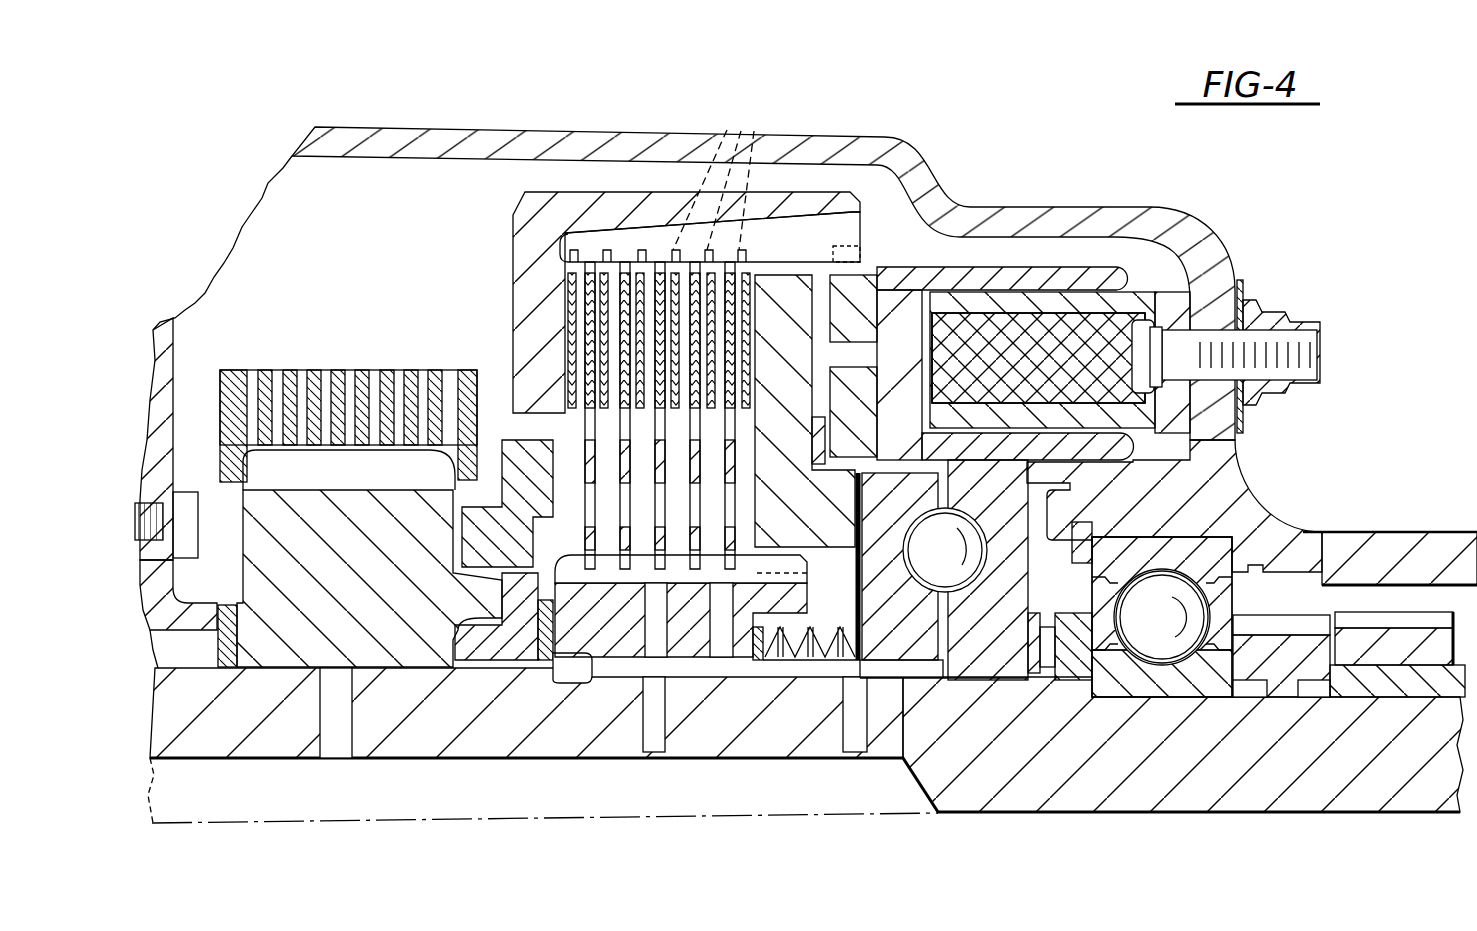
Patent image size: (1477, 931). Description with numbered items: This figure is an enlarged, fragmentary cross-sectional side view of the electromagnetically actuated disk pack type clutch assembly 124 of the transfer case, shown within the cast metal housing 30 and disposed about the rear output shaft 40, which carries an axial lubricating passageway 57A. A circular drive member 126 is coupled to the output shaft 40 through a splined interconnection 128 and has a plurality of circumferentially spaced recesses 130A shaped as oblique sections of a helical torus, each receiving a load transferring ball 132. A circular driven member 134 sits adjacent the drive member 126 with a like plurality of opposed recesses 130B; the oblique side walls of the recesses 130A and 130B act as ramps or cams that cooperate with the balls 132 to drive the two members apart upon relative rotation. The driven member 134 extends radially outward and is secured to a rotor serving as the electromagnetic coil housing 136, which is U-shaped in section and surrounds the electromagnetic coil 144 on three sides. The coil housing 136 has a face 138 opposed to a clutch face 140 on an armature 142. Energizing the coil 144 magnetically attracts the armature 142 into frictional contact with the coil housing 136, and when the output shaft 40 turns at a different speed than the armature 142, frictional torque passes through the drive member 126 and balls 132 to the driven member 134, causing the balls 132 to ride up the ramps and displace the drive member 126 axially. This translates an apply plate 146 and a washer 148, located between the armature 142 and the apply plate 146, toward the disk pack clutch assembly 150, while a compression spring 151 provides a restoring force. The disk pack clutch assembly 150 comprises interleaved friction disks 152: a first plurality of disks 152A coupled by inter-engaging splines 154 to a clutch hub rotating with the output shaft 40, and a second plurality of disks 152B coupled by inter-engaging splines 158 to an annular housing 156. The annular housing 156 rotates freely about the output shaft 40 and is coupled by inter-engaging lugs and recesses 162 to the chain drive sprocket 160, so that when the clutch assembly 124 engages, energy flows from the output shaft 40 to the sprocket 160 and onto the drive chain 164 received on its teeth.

The housing 30 is at (1393, 542).
The rear output shaft 40 is at (1255, 805).
The passageway 57A is at (515, 805).
The clutch assembly 124 is at (938, 168).
The circular drive member 126 is at (900, 660).
The splined interconnection 128 is at (927, 673).
The recesses 130A is at (920, 575).
The opposed recesses 130B is at (980, 525).
The load transferring balls 132 is at (945, 550).
The circular driven member 134 is at (1008, 660).
The electromagnetic coil housing 136 is at (1110, 265).
The face 138 is at (860, 330).
The clutch face 140 is at (900, 270).
The armature 142 is at (832, 258).
The electromagnetic coil 144 is at (1125, 320).
The apply plate 146 is at (830, 553).
The washer 148 is at (748, 497).
The disk pack clutch assembly 150 is at (600, 200).
The compression spring 151 is at (800, 752).
The friction plates or disks 152 is at (595, 405).
The first plurality of disks 152A is at (628, 478).
The second plurality of disks 152B is at (612, 418).
The inter-engaging splines 154 is at (598, 570).
The annular housing 156 is at (560, 196).
The inter-engaging splines 158 is at (740, 132).
The chain drive sprocket 160 is at (322, 595).
The inter-engaging lugs and recesses 162 is at (500, 640).
The drive chain 164 is at (292, 372).